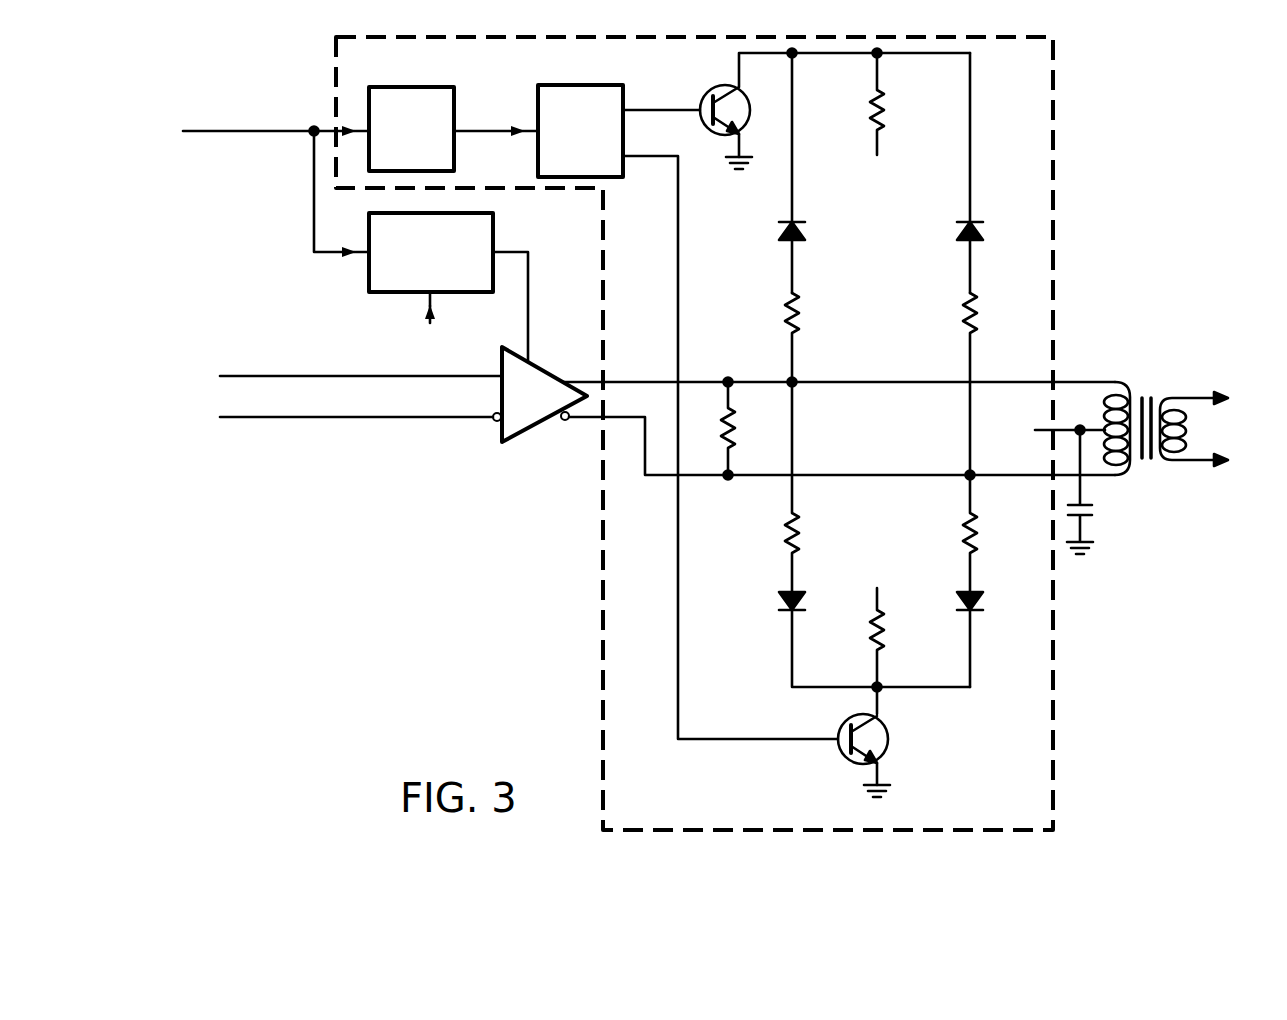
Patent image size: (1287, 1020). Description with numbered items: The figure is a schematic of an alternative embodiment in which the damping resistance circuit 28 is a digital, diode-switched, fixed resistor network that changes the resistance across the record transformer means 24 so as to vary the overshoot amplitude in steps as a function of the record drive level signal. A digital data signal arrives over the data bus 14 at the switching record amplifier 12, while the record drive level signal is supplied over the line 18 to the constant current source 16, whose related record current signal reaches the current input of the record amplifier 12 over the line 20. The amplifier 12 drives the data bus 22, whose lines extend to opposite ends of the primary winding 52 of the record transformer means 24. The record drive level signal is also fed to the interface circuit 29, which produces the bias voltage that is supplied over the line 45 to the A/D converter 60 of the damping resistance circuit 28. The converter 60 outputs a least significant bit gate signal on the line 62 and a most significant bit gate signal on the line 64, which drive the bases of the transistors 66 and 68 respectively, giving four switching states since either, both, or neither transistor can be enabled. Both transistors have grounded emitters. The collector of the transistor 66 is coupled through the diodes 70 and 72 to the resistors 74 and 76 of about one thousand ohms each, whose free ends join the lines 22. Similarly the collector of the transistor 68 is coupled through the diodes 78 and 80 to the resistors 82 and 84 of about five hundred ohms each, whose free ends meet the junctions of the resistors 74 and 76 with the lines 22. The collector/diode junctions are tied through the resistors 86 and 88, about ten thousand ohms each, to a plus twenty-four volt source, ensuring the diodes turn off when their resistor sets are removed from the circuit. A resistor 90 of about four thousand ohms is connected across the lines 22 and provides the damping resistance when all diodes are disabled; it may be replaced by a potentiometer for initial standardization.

The switching record amplifier 12 is at (540, 424).
The data bus 14 is at (296, 376).
The constant current source 16 is at (369, 270).
The line 18 is at (252, 135).
The line 20 is at (508, 253).
The data bus 22 is at (660, 382).
The record transformer means 24 is at (1144, 492).
The damping resistance circuit 28 is at (1055, 215).
The interface circuit 29 is at (407, 87).
The line 45 is at (472, 133).
The primary winding 52 is at (1103, 412).
The A/D converter 60 is at (583, 85).
The line 62 is at (685, 110).
The line 64 is at (678, 245).
The transistor 66 is at (716, 86).
The transistor 68 is at (848, 722).
The diode 70 is at (780, 232).
The diode 72 is at (955, 232).
The resistor 74 is at (785, 315).
The resistor 76 is at (960, 315).
The diode 78 is at (780, 600).
The diode 80 is at (965, 590).
The resistor 82 is at (783, 530).
The resistor 84 is at (965, 515).
The resistor 86 is at (873, 100).
The resistor 88 is at (872, 630).
The resistor 90 is at (722, 425).